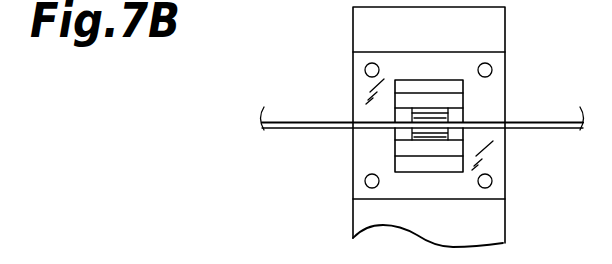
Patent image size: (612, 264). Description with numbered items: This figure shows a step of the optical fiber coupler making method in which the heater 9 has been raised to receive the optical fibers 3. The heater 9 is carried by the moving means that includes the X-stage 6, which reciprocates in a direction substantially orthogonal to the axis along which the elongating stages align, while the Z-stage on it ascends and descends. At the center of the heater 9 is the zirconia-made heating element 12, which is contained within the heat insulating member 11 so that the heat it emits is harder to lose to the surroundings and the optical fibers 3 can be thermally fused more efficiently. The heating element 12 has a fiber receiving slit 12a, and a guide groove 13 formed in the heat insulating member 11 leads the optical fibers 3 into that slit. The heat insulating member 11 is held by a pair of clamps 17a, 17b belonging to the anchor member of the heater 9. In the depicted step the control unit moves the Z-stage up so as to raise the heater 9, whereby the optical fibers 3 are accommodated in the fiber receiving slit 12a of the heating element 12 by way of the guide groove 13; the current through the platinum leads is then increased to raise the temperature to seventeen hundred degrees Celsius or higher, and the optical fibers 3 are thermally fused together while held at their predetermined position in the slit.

The X-stage 6 is at (497, 20).
The clamp 17a is at (408, 85).
The heat insulating member 11 is at (403, 102).
The guide groove 13 is at (402, 116).
The optical fibers 3 is at (527, 122).
The fiber receiving slit 12a is at (402, 133).
The heating element 12 is at (398, 140).
The clamp 17b is at (408, 163).
The heater 9 is at (508, 177).